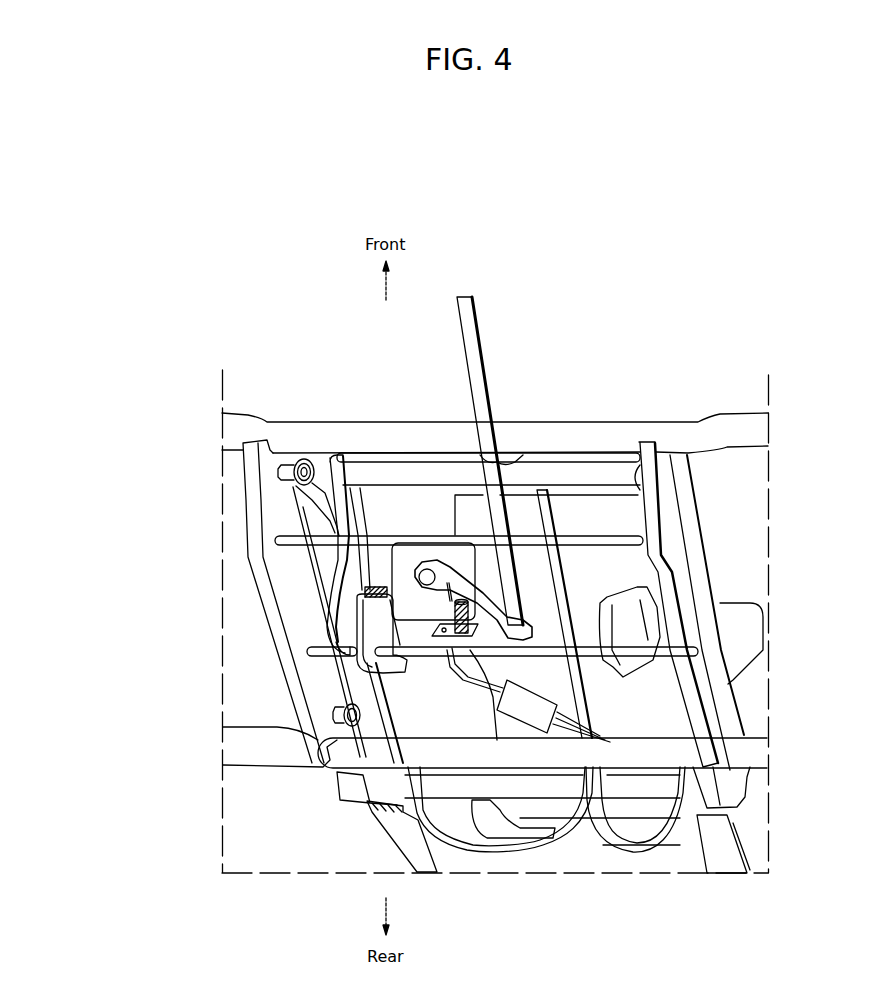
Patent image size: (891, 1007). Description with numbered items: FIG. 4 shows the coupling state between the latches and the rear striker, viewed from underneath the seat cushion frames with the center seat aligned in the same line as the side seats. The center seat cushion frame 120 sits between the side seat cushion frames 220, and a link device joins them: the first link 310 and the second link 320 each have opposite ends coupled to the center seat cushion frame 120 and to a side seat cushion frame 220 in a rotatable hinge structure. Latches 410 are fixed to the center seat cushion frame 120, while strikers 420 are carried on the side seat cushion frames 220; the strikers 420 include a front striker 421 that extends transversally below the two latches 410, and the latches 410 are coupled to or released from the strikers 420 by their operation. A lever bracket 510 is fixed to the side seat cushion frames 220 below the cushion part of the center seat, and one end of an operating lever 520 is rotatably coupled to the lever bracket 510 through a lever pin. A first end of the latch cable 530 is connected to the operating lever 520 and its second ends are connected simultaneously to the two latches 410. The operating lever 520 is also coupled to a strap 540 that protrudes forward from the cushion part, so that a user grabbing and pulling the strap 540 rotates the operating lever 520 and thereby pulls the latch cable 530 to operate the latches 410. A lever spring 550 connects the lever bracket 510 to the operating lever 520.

The center seat cushion frame 120 is at (368, 682).
The side seat cushion frame 220 is at (318, 668).
The first link 310 is at (300, 505).
The second link 320 is at (357, 800).
The latch 410 is at (370, 622).
The striker 420 is at (451, 650).
The front striker 421 is at (368, 585).
The lever bracket 510 is at (403, 553).
The operating lever 520 is at (455, 585).
The latch cable 530 is at (366, 588).
The strap 540 is at (460, 297).
The lever spring 550 is at (483, 613).